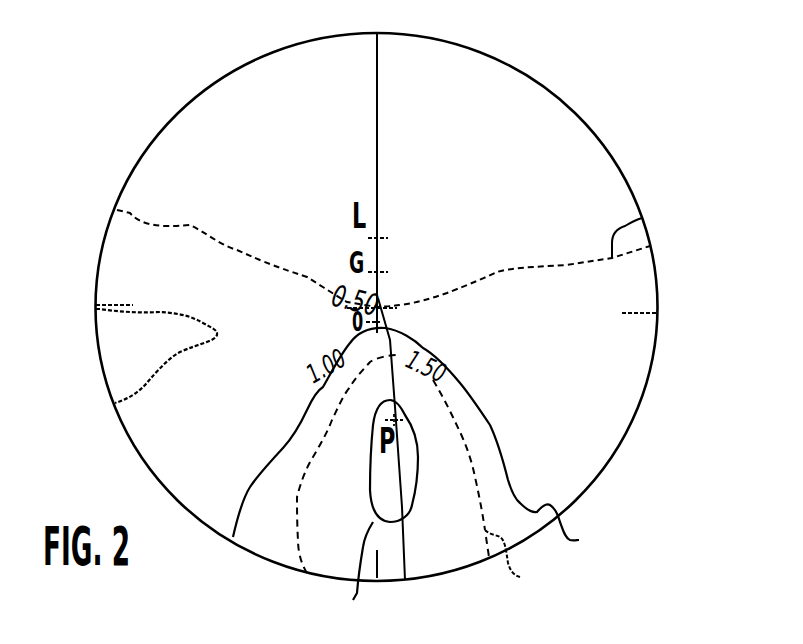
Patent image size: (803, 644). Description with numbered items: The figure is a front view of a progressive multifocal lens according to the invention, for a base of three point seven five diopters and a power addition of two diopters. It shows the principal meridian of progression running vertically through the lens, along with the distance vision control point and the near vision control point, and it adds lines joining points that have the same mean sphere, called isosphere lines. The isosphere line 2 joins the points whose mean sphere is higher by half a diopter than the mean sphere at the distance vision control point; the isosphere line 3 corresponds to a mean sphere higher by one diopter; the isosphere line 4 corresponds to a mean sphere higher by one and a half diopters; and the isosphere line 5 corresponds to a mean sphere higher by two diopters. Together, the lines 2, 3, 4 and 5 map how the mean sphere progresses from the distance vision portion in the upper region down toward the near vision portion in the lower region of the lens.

The isosphere line 2 is at (642, 218).
The isosphere line 3 is at (412, 445).
The isosphere line 4 is at (416, 471).
The isosphere line 5 is at (352, 570).